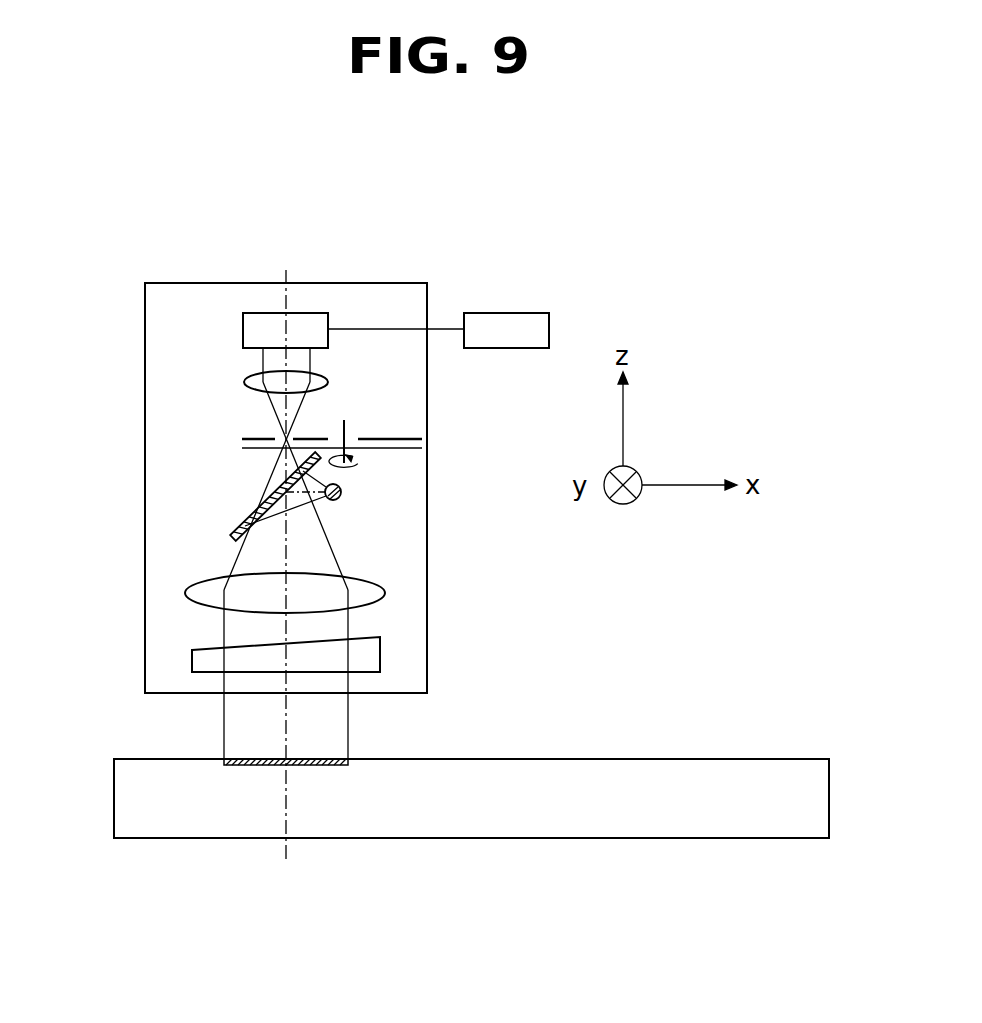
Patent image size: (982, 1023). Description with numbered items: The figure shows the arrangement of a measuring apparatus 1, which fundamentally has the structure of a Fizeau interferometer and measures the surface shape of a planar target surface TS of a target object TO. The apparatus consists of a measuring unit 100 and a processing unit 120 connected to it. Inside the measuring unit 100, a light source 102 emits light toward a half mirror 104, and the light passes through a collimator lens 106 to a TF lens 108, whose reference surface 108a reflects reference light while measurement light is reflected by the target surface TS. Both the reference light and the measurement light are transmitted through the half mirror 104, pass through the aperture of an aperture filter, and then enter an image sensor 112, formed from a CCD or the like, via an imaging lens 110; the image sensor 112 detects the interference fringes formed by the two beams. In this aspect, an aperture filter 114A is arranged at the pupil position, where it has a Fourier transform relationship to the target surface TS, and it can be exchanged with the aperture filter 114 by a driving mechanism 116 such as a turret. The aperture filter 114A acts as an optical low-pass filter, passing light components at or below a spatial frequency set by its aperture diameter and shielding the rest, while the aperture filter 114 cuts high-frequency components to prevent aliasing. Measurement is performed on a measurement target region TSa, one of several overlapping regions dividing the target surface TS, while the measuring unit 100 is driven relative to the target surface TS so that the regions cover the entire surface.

The measuring apparatus 1 is at (395, 178).
The measuring unit 100 is at (183, 292).
The light source 102 is at (341, 489).
The half mirror 104 is at (235, 528).
The collimator lens 106 is at (373, 593).
The TF lens 108 is at (367, 650).
The reference surface 108a is at (205, 670).
The imaging lens 110 is at (243, 384).
The image sensor 112 is at (243, 330).
The aperture filter 114 is at (408, 438).
The aperture filter 114A is at (277, 438).
The driving mechanism 116 is at (403, 449).
The processing unit 120 is at (507, 322).
The target surface TS is at (140, 759).
The measurement target region TSa is at (322, 753).
The target object TO is at (650, 783).